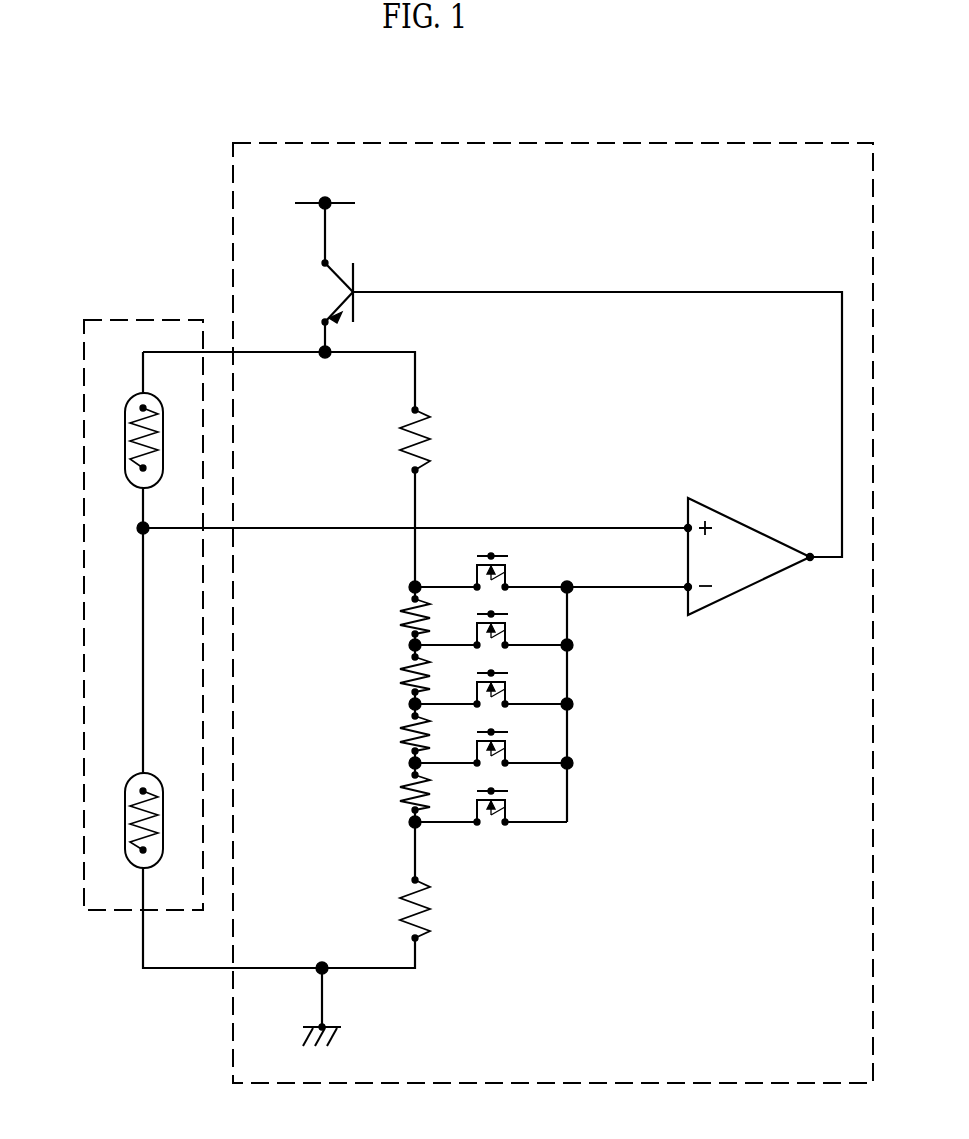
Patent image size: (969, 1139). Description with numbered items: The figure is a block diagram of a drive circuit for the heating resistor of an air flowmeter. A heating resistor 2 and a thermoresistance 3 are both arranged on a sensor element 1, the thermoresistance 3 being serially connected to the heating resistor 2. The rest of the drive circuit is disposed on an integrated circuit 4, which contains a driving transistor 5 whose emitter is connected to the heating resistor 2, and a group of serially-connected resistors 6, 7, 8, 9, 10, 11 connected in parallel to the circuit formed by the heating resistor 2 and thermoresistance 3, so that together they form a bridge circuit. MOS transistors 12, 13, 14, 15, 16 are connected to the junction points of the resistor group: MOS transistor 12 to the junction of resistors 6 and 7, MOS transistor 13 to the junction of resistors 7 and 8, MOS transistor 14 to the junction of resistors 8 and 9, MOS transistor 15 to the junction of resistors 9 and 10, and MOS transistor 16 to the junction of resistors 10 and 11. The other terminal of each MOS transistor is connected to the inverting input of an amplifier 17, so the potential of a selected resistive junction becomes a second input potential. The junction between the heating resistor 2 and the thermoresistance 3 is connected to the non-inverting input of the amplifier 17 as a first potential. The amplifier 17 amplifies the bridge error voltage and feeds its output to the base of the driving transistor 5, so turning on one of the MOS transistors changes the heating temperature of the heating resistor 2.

The sensor element 1 is at (101, 320).
The heating resistor 2 is at (132, 438).
The thermoresistance 3 is at (132, 818).
The integrated circuit 4 is at (602, 143).
The driving transistor 5 is at (355, 270).
The resistor 6 is at (420, 435).
The resistor 7 is at (408, 612).
The resistor 8 is at (408, 670).
The resistor 9 is at (408, 728).
The resistor 10 is at (408, 788).
The resistor 11 is at (425, 913).
The MOS transistor 12 is at (510, 578).
The MOS transistor 13 is at (510, 636).
The MOS transistor 14 is at (510, 696).
The MOS transistor 15 is at (510, 755).
The MOS transistor 16 is at (510, 814).
The amplifier 17 is at (733, 556).